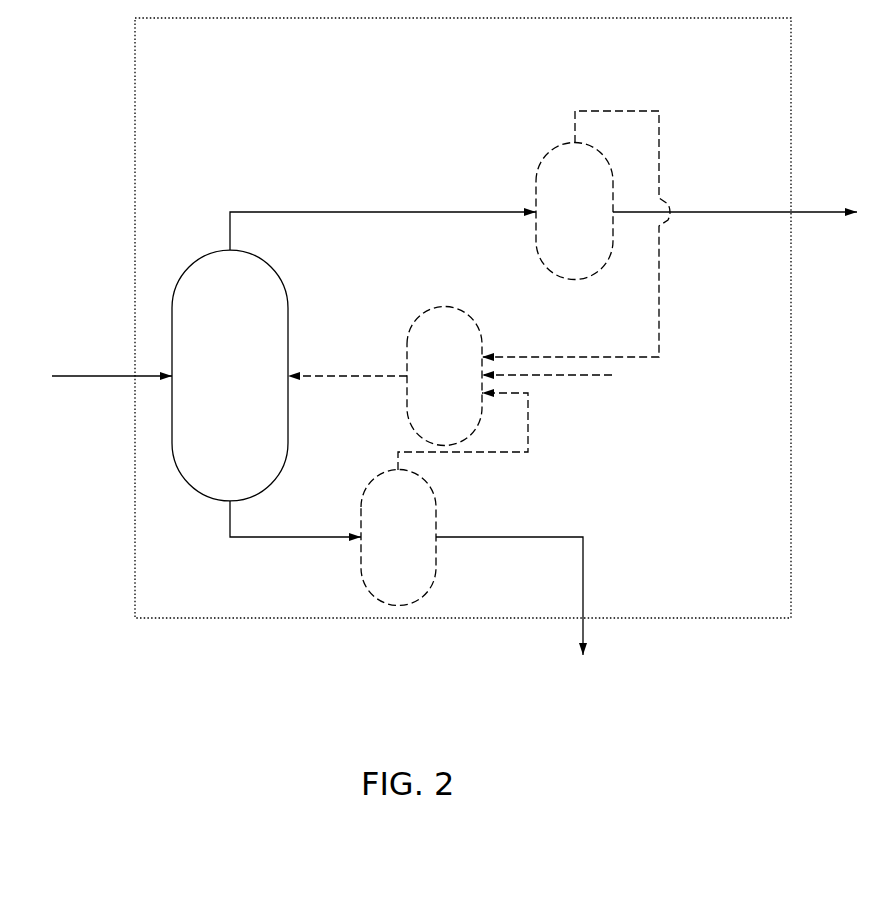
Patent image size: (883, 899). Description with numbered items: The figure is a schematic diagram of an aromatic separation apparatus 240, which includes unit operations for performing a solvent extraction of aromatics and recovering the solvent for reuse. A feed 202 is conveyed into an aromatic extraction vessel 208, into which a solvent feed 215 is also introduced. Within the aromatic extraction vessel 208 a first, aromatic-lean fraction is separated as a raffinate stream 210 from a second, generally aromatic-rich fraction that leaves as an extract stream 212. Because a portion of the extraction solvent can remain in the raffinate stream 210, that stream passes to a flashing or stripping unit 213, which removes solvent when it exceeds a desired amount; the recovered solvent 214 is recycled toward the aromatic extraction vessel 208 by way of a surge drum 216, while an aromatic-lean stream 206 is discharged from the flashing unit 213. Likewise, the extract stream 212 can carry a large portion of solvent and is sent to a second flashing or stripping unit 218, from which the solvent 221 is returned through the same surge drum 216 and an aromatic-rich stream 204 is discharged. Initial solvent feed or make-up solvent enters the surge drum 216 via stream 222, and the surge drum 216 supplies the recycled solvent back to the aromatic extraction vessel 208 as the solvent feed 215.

The aromatic separation apparatus 240 is at (424, 318).
The feed 202 is at (102, 347).
The aromatic extraction vessel 208 is at (256, 384).
The raffinate stream 210 is at (383, 203).
The flashing or stripping unit 213 is at (596, 227).
The solvent 214 is at (576, 208).
The aromatic-lean stream 206 is at (735, 180).
The solvent feed 215 is at (347, 346).
The surge drum 216 is at (467, 391).
The make-up solvent stream 222 is at (565, 402).
The solvent 221 is at (510, 431).
The flashing or stripping unit 218 is at (420, 551).
The extract stream 212 is at (295, 513).
The aromatic-rich stream 204 is at (556, 596).